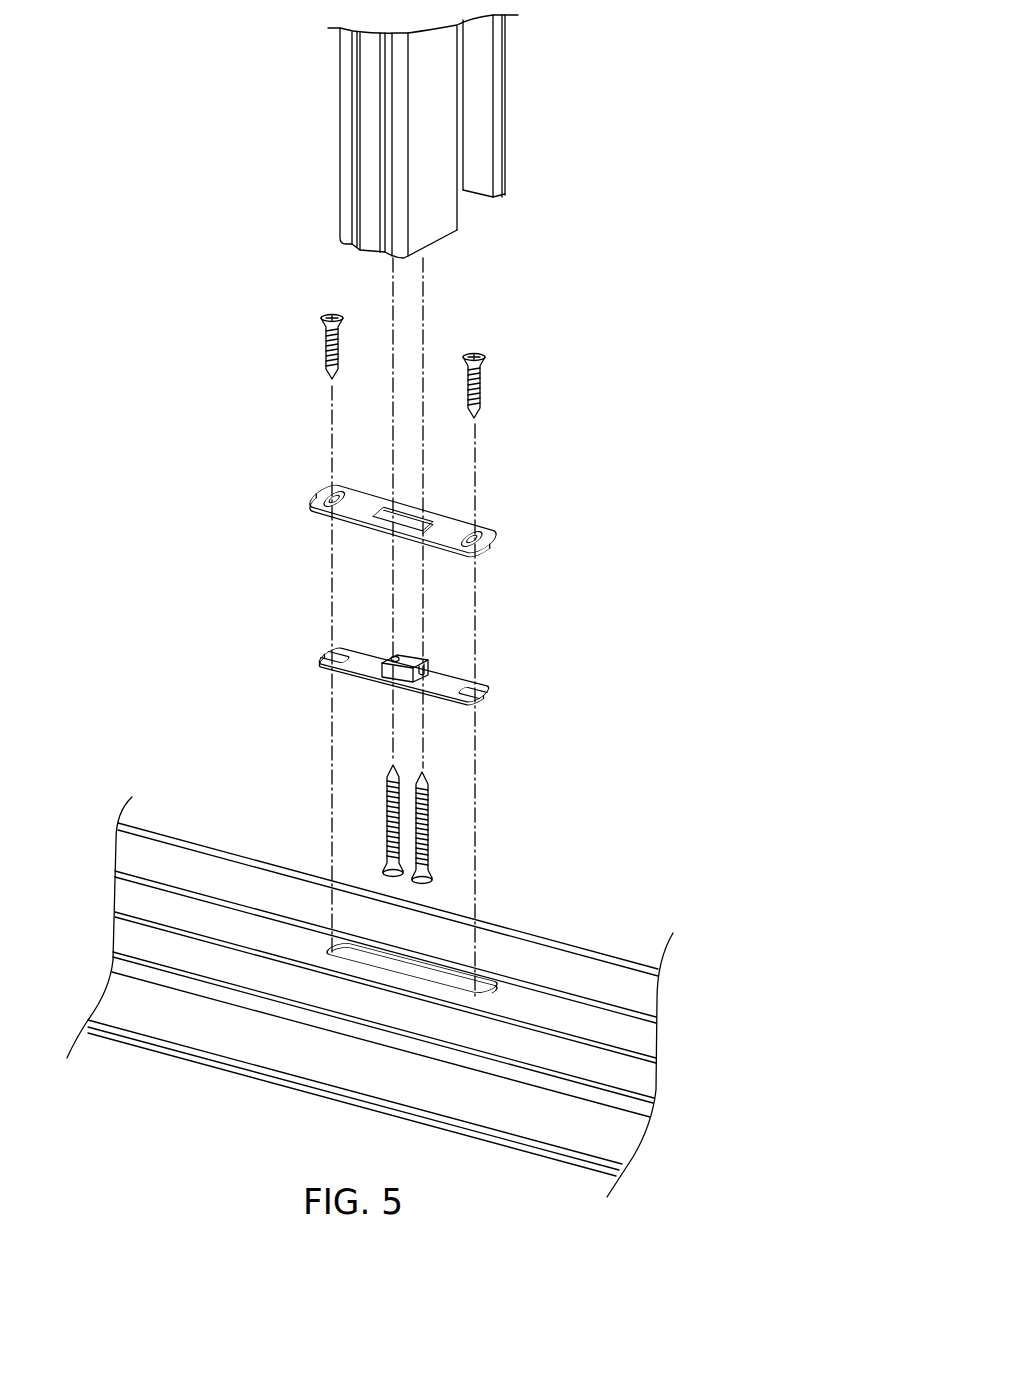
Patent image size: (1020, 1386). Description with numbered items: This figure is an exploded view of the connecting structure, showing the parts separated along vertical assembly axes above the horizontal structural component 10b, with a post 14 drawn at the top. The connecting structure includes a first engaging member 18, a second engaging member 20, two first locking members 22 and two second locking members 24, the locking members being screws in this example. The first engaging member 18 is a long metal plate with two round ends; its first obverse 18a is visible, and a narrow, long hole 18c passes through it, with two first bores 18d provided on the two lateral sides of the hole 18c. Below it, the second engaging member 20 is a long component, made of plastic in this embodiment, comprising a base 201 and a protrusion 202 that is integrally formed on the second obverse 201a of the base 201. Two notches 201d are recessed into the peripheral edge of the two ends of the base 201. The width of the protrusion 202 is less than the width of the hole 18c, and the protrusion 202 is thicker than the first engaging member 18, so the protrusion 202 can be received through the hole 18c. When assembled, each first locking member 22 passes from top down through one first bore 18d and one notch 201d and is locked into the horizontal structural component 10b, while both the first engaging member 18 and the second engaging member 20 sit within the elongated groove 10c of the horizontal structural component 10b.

The post 14 is at (350, 127).
The first locking member 22 is at (484, 368).
The first engaging member 18 is at (423, 464).
The first obverse 18a is at (447, 527).
The hole 18c is at (401, 510).
The first bore 18d is at (323, 488).
The second engaging member 20 is at (410, 603).
The base 201 is at (395, 602).
The second obverse 201a is at (368, 655).
The notch 201d is at (330, 652).
The protrusion 202 is at (407, 663).
The second locking member 24 is at (430, 807).
The horizontal structural component 10b is at (370, 997).
The groove 10c is at (447, 975).